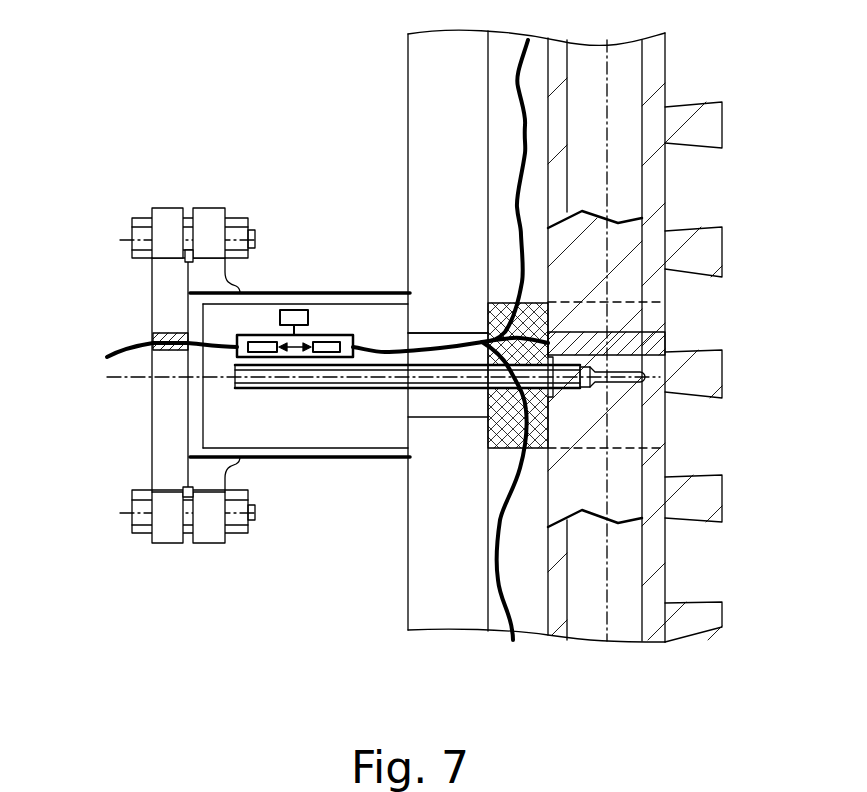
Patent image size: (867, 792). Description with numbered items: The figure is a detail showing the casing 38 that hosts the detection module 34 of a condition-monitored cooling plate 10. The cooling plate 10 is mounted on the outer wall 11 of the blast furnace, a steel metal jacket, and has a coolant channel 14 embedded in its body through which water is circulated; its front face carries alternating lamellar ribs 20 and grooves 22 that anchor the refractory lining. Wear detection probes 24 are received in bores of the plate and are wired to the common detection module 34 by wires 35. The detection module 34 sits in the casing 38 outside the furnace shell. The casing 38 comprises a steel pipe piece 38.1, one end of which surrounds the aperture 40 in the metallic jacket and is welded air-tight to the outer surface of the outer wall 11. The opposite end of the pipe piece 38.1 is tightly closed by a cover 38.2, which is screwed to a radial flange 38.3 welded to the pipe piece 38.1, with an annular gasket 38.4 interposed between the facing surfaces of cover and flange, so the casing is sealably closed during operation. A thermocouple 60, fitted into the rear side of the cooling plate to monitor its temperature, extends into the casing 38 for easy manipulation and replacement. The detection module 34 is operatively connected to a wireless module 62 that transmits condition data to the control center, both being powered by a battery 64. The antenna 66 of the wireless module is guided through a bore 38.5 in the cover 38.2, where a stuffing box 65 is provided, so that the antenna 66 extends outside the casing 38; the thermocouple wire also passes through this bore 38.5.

The cooling plate 10 is at (548, 625).
The outer wall 11 is at (445, 625).
The coolant channel 14 is at (622, 622).
The lamellar ribs 20 is at (705, 505).
The grooves 22 is at (650, 438).
The wear detection probe 24 is at (658, 343).
The detection module 34 is at (325, 344).
The wires 35 is at (520, 340).
The casing 38 is at (266, 488).
The steel pipe piece 38.1 is at (347, 450).
The cover 38.2 is at (170, 438).
The radial flange 38.3 is at (212, 217).
The annular gasket 38.4 is at (182, 258).
The bore 38.5 is at (177, 352).
The aperture 40 is at (409, 342).
The thermocouple 60 is at (378, 378).
The wireless module 62 is at (257, 344).
The battery 64 is at (295, 318).
The stuffing box 65 is at (183, 346).
The antenna 66 is at (107, 352).